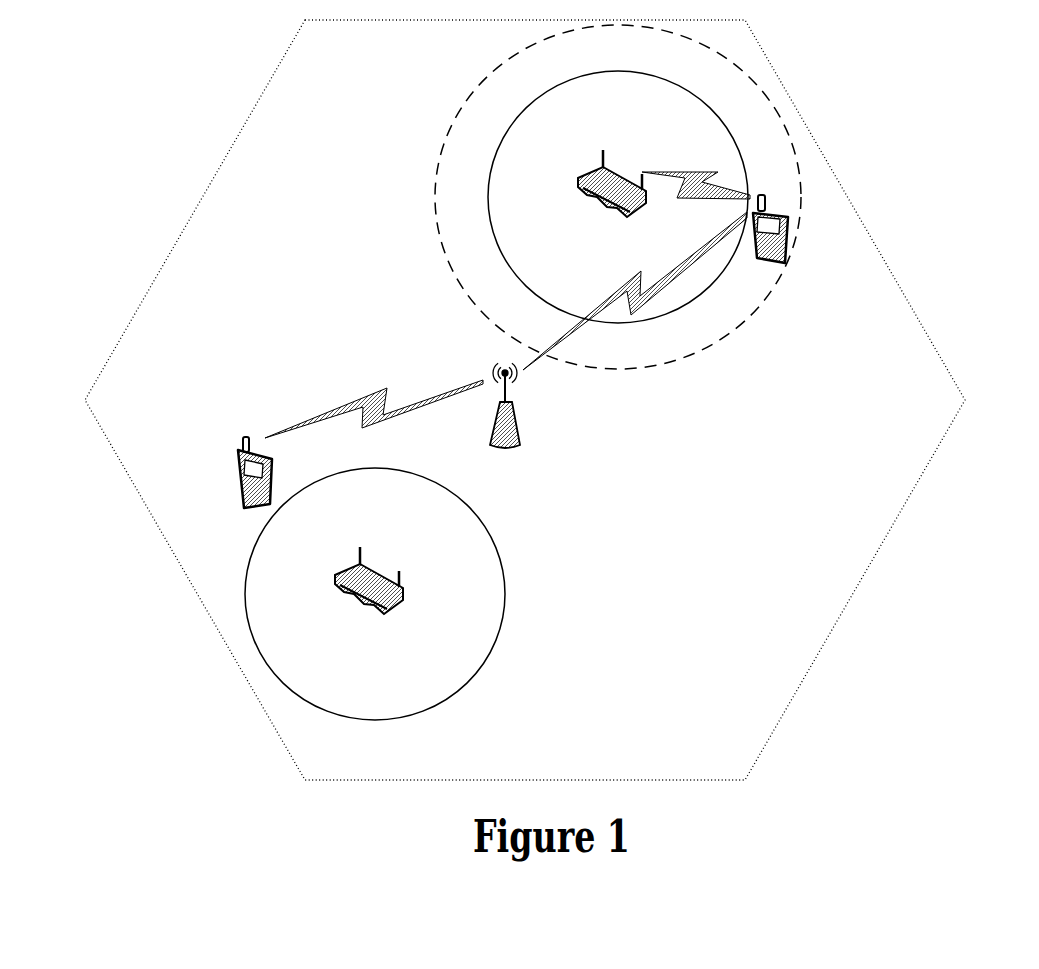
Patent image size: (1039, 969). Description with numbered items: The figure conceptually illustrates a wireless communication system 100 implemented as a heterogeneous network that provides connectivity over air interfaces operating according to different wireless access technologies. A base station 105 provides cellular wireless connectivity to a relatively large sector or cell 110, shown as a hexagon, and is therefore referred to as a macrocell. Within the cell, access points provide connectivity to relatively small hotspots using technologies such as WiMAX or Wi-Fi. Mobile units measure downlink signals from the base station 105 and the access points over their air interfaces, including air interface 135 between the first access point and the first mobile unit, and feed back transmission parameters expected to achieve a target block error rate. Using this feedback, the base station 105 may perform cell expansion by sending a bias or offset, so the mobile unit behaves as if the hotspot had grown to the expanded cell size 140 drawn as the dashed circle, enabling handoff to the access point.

The wireless communication system 100 is at (962, 82).
The base station 105 is at (508, 450).
The cell 110 is at (810, 662).
The air interface 135 is at (702, 173).
The expanded cell size 140 is at (438, 158).